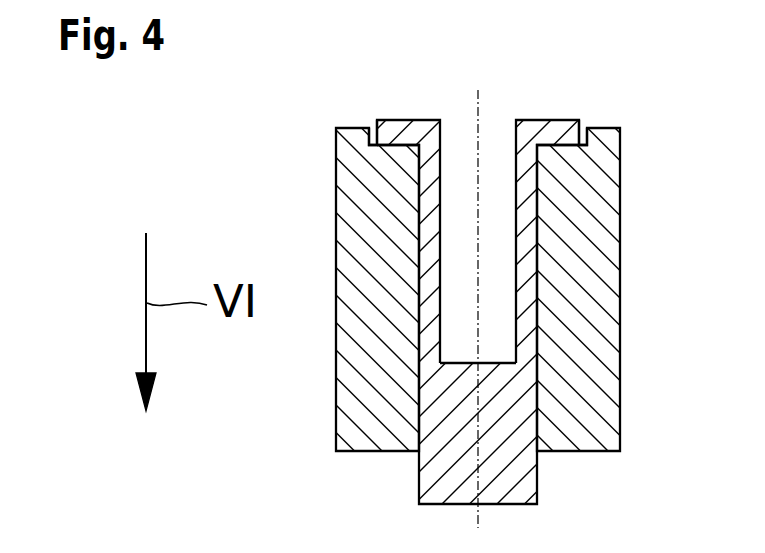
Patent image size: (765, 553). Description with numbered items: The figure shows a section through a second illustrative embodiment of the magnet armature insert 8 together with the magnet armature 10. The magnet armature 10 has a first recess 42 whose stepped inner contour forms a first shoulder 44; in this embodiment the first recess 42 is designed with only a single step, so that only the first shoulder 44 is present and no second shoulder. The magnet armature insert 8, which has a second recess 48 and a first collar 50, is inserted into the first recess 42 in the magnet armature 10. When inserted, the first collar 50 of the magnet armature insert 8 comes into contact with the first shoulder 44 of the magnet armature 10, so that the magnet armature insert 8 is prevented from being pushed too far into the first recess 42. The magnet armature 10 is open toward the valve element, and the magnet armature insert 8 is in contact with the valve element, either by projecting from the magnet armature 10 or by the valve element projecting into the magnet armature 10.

The magnet armature 10 is at (583, 189).
The first recess 42 is at (430, 180).
The magnet armature insert 8 is at (430, 482).
The second recess 48 is at (500, 310).
The first collar 50 is at (390, 124).
The first shoulder 44 is at (565, 133).